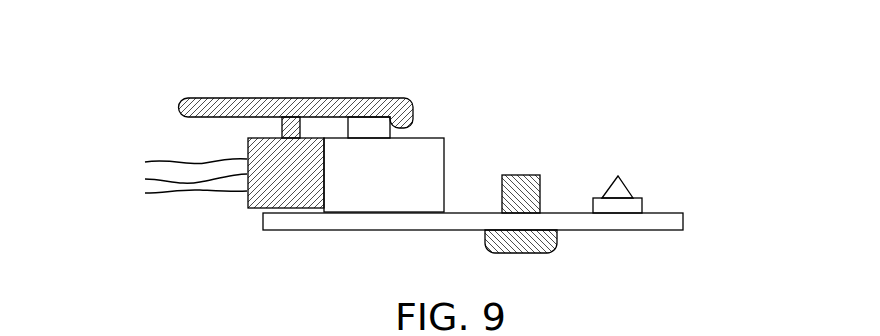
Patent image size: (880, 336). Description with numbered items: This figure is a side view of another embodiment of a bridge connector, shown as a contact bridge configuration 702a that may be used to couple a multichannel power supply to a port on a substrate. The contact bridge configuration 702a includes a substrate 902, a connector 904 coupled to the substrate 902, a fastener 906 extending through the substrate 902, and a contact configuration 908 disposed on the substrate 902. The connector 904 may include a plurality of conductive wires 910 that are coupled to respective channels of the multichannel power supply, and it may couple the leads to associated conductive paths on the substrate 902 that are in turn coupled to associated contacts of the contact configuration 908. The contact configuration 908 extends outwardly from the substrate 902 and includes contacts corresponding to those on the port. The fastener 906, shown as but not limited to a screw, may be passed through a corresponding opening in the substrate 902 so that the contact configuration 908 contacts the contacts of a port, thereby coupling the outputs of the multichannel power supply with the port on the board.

The contact bridge configuration 702a is at (698, 50).
The substrate 902 is at (682, 212).
The connector 904 is at (296, 60).
The fastener 906 is at (517, 178).
The contact configuration 908 is at (628, 192).
The conductive wires 910 is at (141, 150).